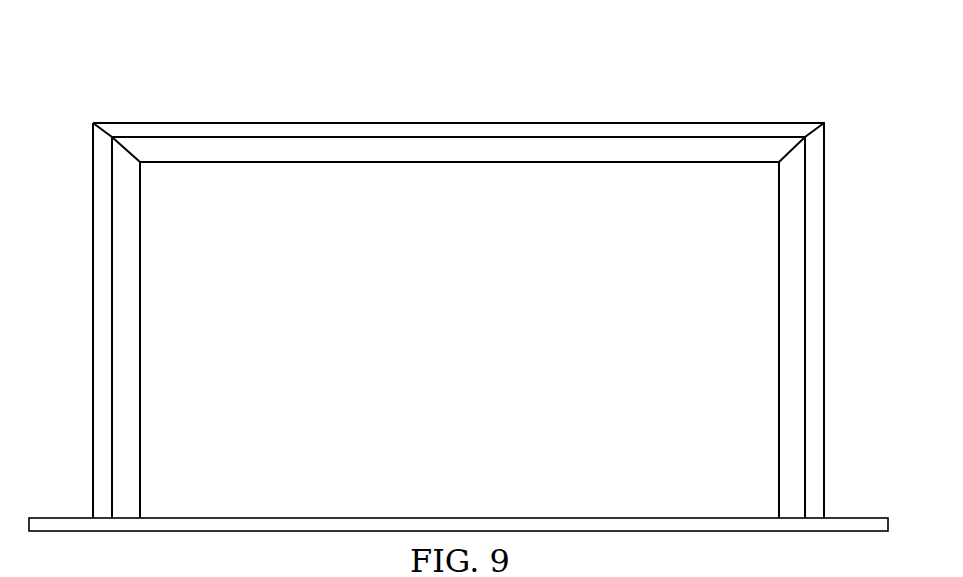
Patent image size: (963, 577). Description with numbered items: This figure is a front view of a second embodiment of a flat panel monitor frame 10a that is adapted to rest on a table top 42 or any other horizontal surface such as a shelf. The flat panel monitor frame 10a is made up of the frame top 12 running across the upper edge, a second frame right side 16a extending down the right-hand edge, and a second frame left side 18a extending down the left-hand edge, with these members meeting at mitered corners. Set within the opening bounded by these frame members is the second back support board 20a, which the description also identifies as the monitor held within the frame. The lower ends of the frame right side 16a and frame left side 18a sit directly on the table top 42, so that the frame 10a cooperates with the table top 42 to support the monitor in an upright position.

The flat panel monitor frame 10a is at (578, 100).
The frame top 12 is at (234, 142).
The second frame left side 18a is at (125, 274).
The second frame right side 16a is at (795, 261).
The second back support board 20a is at (245, 321).
The table top 42 is at (843, 527).